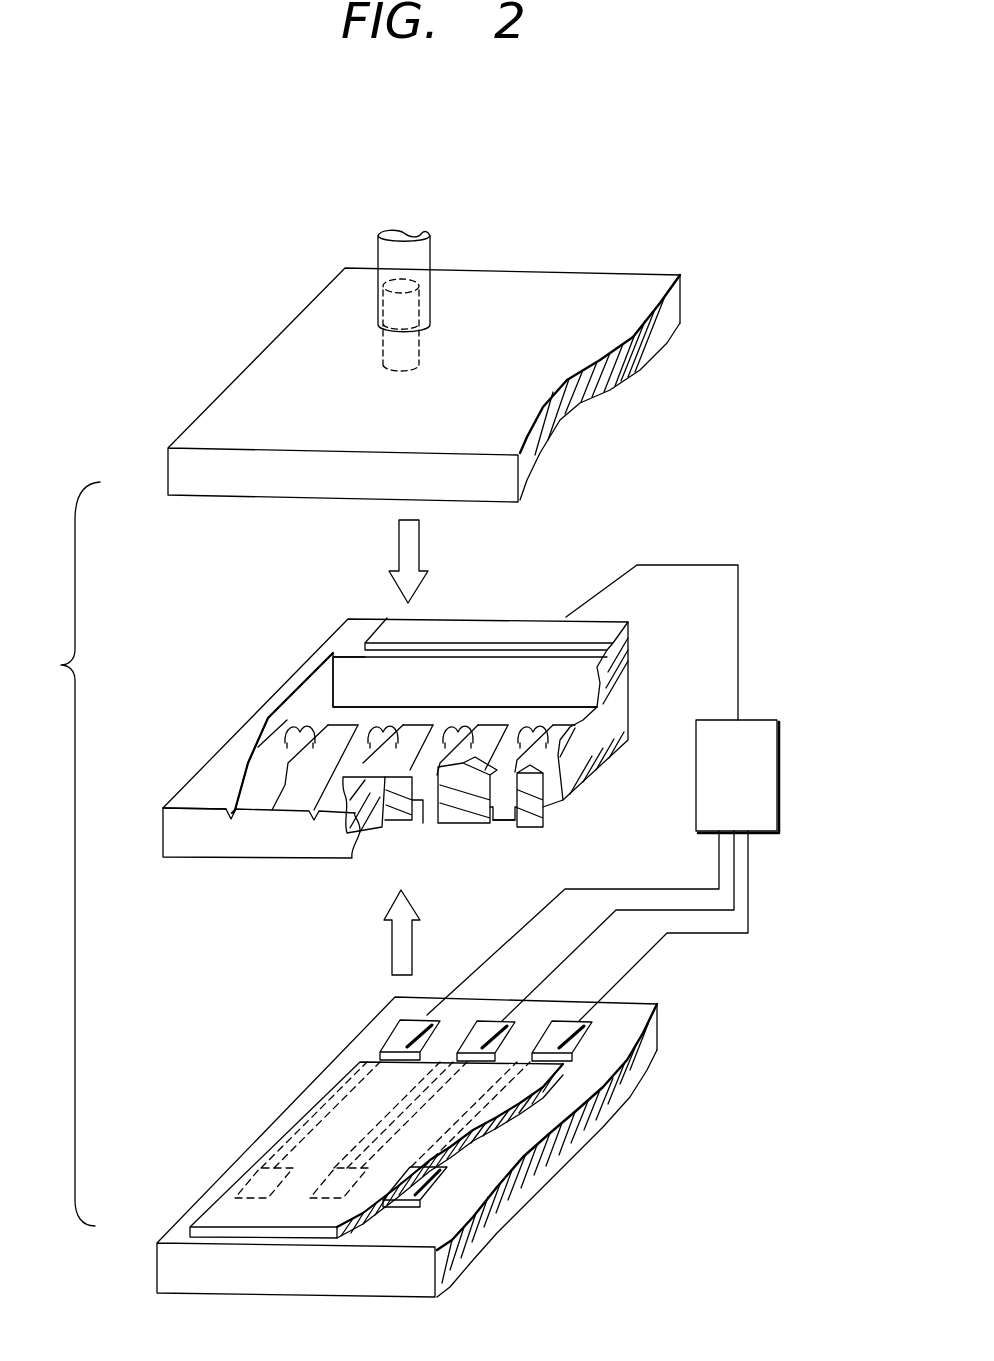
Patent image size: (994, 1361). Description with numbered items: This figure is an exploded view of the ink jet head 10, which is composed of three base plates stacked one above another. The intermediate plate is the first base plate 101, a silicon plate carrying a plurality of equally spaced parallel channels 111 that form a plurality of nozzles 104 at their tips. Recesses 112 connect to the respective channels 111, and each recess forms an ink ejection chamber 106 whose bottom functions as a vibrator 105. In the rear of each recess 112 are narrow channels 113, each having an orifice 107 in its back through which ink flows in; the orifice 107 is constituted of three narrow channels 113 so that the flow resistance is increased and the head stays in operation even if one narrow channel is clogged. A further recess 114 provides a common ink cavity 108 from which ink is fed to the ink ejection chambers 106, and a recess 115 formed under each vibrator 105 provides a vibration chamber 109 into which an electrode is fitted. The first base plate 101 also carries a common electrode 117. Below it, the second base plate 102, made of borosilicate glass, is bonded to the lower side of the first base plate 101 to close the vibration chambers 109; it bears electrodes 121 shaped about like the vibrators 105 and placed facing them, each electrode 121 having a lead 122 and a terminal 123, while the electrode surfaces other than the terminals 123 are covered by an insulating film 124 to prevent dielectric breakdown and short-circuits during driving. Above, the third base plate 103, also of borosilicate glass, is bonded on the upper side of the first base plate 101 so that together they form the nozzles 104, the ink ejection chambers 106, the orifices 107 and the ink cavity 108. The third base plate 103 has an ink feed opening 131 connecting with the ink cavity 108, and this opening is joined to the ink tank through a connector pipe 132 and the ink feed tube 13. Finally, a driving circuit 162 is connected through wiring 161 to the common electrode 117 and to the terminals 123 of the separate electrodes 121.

The ink jet head 10 is at (50, 675).
The ink feed tube 13 is at (418, 233).
The first base plate 101 is at (624, 676).
The second base plate 102 is at (643, 1040).
The third base plate 103 is at (607, 282).
The nozzles 104 is at (217, 822).
The vibrator 105 is at (433, 798).
The ink ejection chamber 106 is at (268, 766).
The orifice 107 is at (313, 711).
The ink cavity 108 is at (442, 680).
The vibration chamber 109 is at (512, 813).
The channels 111 is at (236, 791).
The recesses 112 is at (254, 771).
The narrow channels 113 is at (292, 720).
The recess 114 is at (529, 677).
The recess 115 is at (506, 812).
The common electrode 117 is at (499, 631).
The electrodes 121 is at (430, 1190).
The lead 122 is at (455, 1150).
The terminal 123 is at (577, 1040).
The insulating film 124 is at (505, 1112).
The ink feed opening 131 is at (423, 347).
The connector pipe 132 is at (427, 283).
The wiring 161 is at (643, 957).
The driving circuit 162 is at (781, 757).